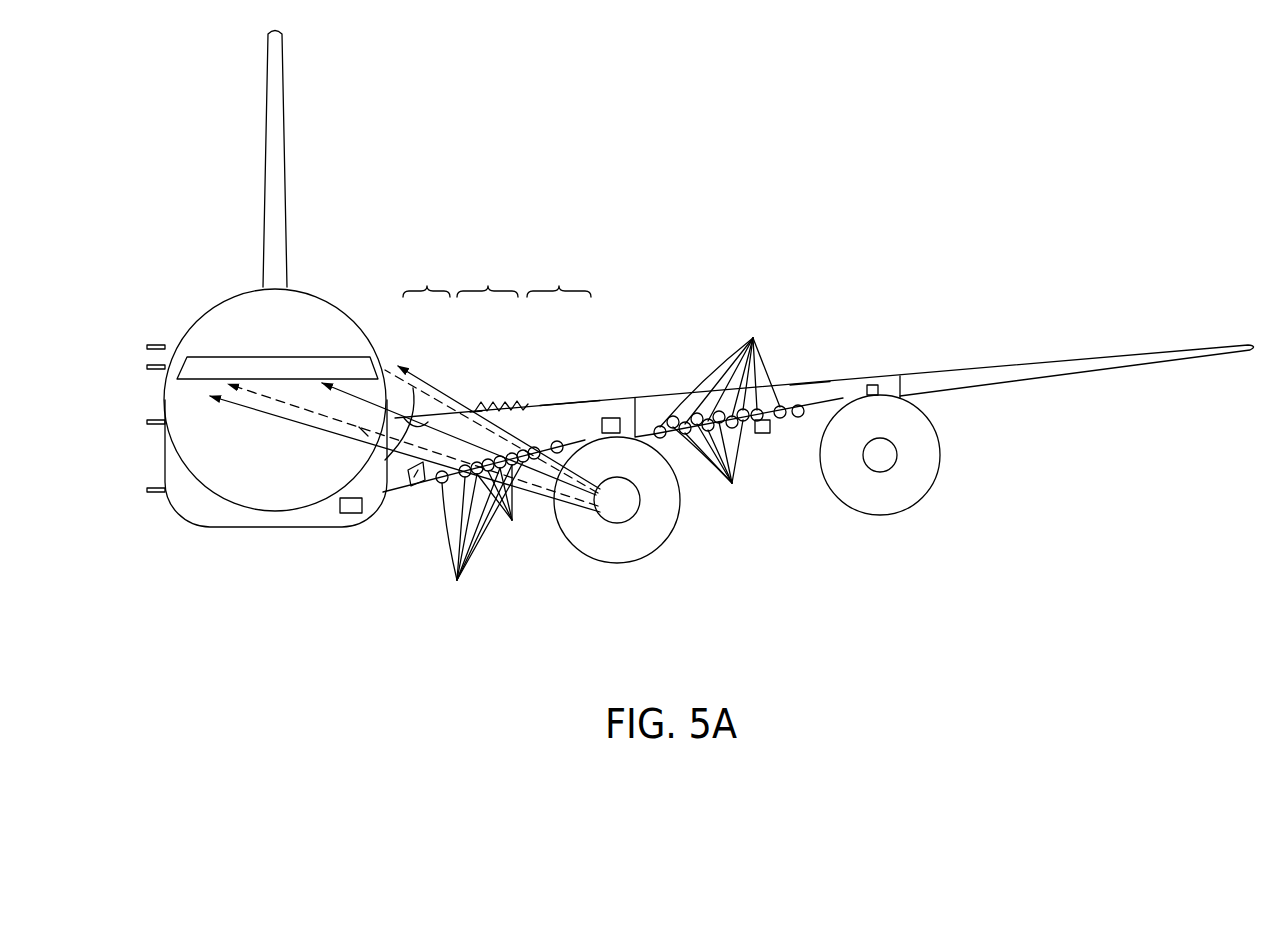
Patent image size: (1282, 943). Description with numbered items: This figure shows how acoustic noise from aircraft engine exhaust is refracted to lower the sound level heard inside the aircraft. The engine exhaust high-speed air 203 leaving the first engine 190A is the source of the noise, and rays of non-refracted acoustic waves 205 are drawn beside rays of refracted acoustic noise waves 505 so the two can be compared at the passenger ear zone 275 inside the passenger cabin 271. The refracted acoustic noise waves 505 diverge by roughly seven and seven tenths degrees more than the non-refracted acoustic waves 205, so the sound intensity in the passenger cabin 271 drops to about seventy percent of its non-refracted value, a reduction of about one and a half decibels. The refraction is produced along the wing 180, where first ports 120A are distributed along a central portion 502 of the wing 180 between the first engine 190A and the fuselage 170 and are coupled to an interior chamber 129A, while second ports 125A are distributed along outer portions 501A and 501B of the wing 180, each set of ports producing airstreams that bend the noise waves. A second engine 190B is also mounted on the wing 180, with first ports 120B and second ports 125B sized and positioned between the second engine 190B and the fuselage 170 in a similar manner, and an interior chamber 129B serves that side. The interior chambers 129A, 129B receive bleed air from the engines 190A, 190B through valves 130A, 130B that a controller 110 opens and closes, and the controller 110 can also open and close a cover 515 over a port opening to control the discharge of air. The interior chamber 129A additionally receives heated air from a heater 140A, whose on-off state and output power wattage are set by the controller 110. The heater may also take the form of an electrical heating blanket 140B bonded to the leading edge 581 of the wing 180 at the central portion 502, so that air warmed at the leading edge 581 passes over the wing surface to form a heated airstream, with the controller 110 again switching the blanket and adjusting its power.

The controller 110 is at (345, 513).
The first ports 120A is at (496, 521).
The first ports 120B is at (720, 428).
The second ports 125A is at (484, 530).
The second ports 125B is at (748, 371).
The interior chamber 129A is at (567, 430).
The interior chamber 129B is at (810, 390).
The valve 130A is at (610, 418).
The valve 130B is at (875, 385).
The heater 140A is at (412, 495).
The electrical heating blanket 140B is at (478, 410).
The fuselage 170 is at (330, 296).
The wing 180 is at (1073, 360).
The engine 190A is at (612, 563).
The engine 190B is at (943, 455).
The engine exhaust high-speed air 203 is at (627, 508).
The non-refracted acoustic waves 205 is at (363, 432).
The passenger cabin 271 is at (233, 310).
The passenger ear zone 275 is at (187, 360).
The outer portion 501A is at (426, 276).
The outer portion 501B is at (561, 276).
The central portion 502 is at (487, 276).
The refracted acoustic noise waves 505 is at (396, 357).
The cover 515 is at (798, 427).
The leading edge 581 is at (528, 405).